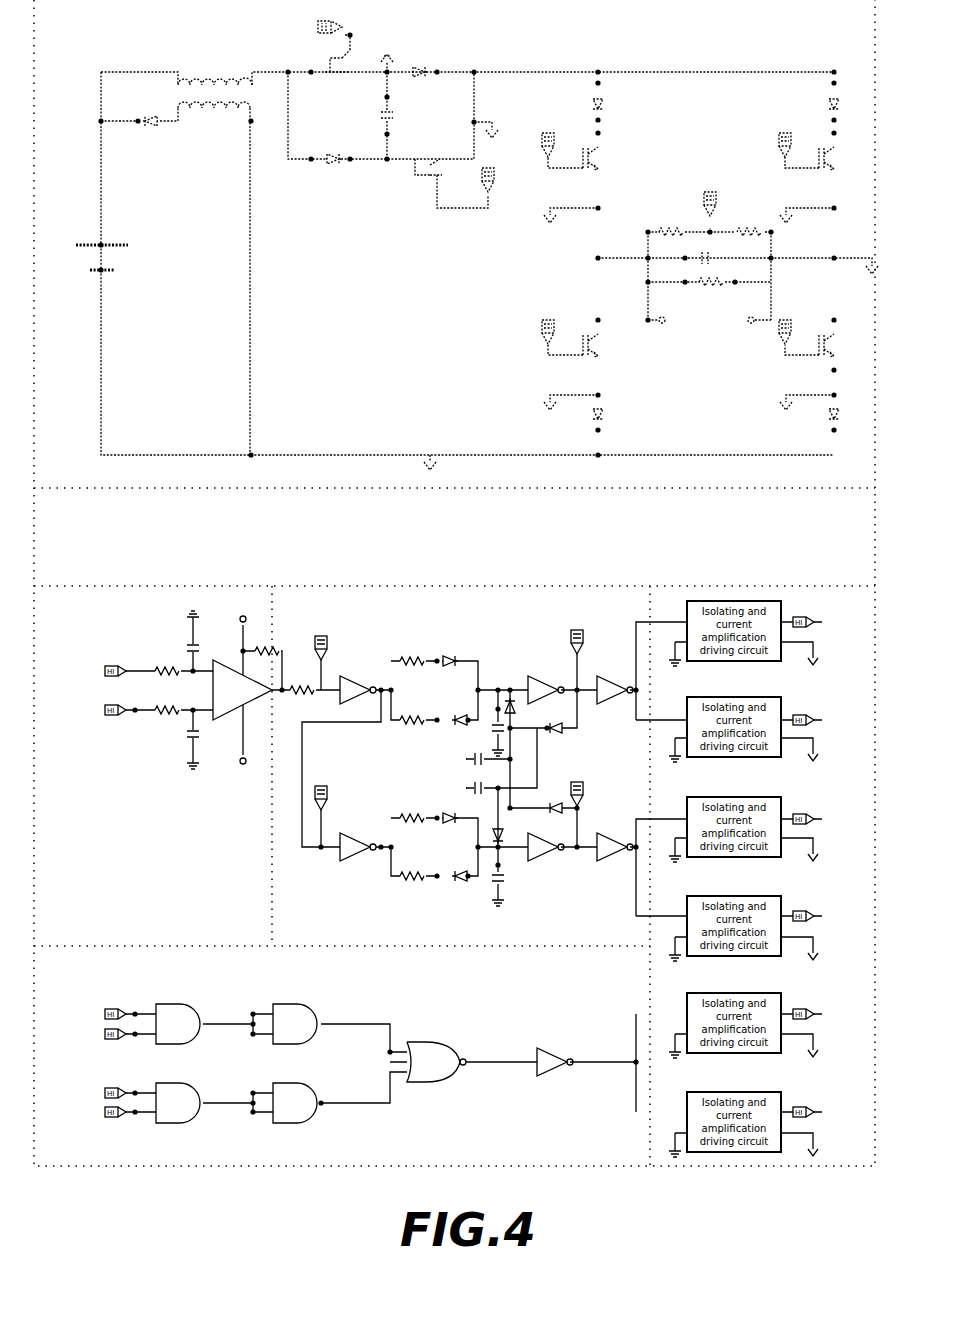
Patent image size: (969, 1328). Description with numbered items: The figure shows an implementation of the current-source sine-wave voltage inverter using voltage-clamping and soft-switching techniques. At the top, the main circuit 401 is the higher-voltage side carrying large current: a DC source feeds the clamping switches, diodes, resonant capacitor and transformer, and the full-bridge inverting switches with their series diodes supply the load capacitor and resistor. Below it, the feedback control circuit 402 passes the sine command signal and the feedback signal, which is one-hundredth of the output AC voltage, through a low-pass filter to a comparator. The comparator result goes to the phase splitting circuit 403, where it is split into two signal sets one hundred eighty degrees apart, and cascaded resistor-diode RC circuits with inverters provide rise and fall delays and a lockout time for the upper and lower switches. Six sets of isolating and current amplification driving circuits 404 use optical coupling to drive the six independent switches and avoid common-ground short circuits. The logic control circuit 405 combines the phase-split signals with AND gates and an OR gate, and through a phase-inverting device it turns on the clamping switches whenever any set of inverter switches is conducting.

The main circuit 401 is at (578, 488).
The feedback control circuit 402 is at (92, 586).
The phase splitting circuit 403 is at (335, 586).
The isolating and current amplification driving circuits 404 is at (695, 586).
The logic control circuit 405 is at (312, 1166).